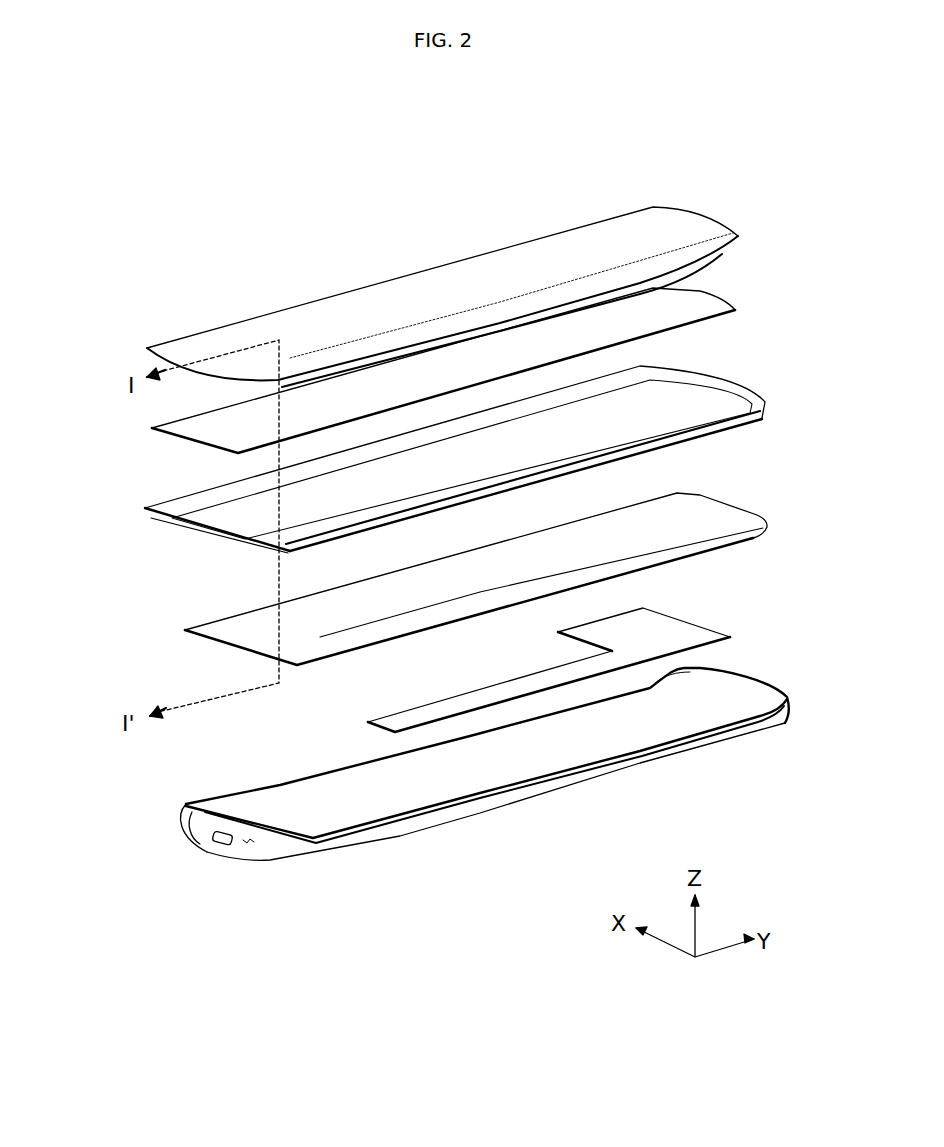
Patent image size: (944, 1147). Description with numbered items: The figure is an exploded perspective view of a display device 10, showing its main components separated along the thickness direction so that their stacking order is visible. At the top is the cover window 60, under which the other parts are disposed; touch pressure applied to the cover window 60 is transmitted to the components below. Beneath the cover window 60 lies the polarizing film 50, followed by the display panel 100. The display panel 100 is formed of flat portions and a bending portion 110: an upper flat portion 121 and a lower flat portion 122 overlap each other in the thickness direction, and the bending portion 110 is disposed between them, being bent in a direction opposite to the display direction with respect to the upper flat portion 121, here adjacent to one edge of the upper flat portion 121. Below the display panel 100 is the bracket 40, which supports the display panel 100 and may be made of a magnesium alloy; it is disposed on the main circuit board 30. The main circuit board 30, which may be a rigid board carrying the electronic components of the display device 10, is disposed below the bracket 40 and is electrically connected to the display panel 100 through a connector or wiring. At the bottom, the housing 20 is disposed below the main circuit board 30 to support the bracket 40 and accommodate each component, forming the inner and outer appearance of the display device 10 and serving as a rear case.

The display device 10 is at (740, 163).
The housing 20 is at (757, 687).
The main circuit board 30 is at (710, 623).
The bracket 40 is at (730, 503).
The display panel 100 is at (414, 474).
The bending portion 110 is at (257, 548).
The upper flat portion 121 is at (245, 510).
The lower flat portion 122 is at (267, 552).
The polarizing film 50 is at (733, 308).
The cover window 60 is at (738, 234).